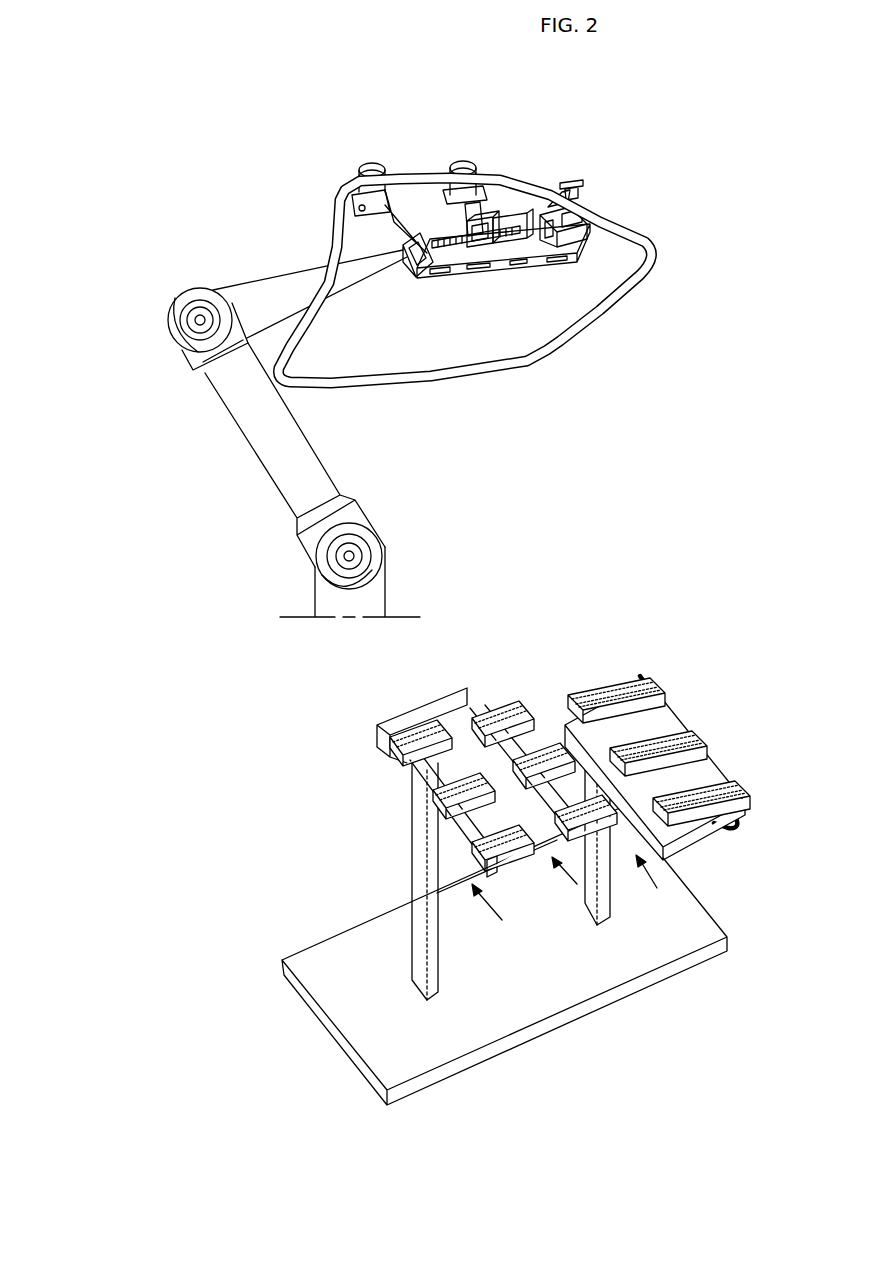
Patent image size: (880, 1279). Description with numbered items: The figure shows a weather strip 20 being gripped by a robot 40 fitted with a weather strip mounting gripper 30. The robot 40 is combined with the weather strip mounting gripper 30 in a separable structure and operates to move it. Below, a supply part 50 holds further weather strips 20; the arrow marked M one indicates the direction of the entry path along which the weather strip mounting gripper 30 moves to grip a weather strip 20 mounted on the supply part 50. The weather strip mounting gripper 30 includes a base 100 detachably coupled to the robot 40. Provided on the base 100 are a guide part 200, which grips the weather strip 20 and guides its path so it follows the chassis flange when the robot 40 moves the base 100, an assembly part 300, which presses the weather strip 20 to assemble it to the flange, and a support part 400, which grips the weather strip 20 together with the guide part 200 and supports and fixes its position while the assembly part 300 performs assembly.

The weather strip 20 is at (660, 250).
The weather strip mounting gripper 30 is at (460, 282).
The robot 40 is at (260, 445).
The supply part 50 is at (467, 686).
The base 100 is at (538, 258).
The guide part 200 is at (372, 168).
The assembly part 300 is at (466, 160).
The support part 400 is at (540, 205).